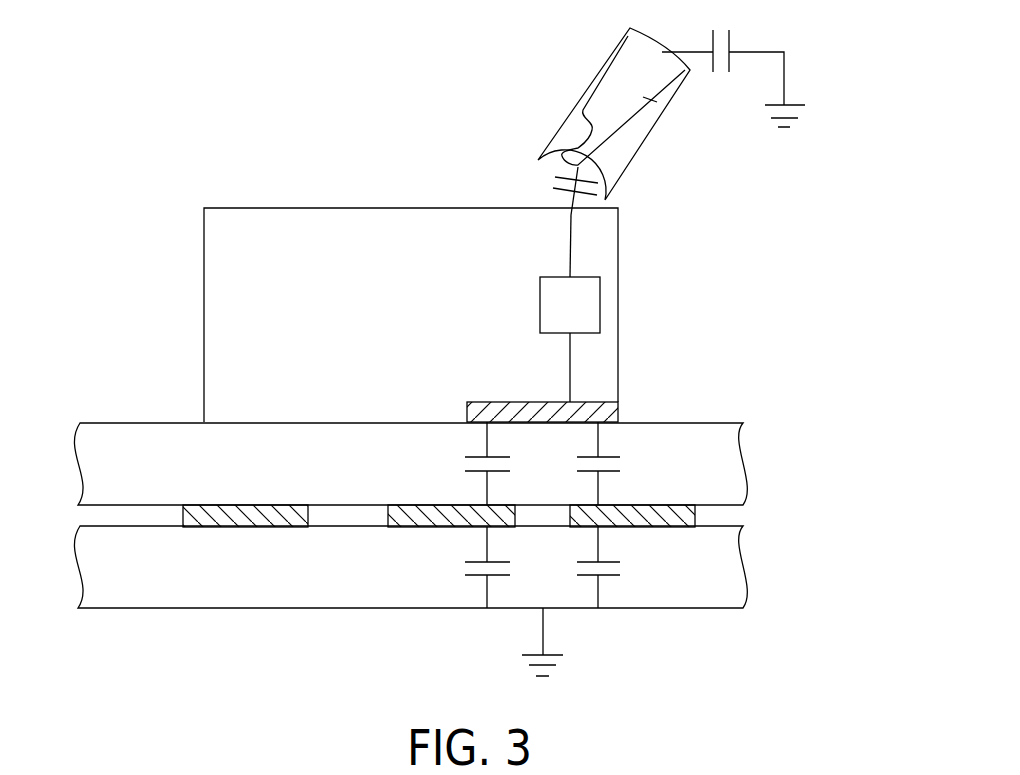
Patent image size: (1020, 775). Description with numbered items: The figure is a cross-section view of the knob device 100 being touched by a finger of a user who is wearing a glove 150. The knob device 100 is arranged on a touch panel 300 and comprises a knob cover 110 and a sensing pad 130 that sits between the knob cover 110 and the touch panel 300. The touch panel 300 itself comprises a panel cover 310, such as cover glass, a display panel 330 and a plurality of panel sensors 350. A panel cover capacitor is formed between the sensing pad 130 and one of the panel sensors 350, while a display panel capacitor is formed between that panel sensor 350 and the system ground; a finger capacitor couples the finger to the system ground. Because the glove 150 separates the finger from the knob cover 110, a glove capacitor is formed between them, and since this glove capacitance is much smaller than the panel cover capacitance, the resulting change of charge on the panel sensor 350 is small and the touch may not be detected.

The knob device 100 is at (272, 157).
The knob cover 110 is at (408, 207).
The sensing pad 130 is at (507, 408).
The glove 150 is at (567, 118).
The touch panel 300 is at (822, 445).
The panel cover 310 is at (743, 462).
The display panel 330 is at (743, 565).
The panel sensors 350 is at (245, 515).